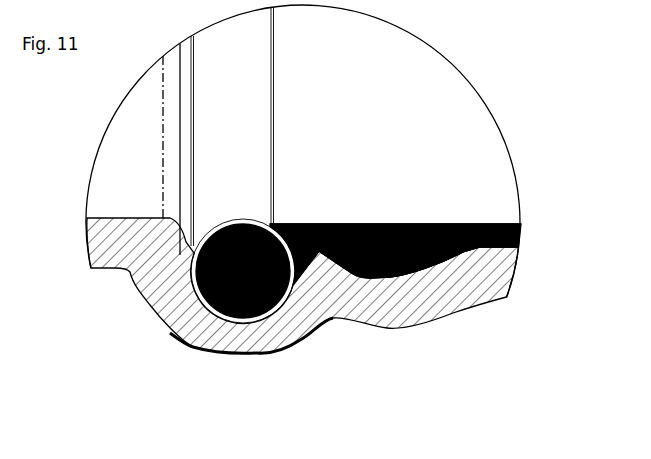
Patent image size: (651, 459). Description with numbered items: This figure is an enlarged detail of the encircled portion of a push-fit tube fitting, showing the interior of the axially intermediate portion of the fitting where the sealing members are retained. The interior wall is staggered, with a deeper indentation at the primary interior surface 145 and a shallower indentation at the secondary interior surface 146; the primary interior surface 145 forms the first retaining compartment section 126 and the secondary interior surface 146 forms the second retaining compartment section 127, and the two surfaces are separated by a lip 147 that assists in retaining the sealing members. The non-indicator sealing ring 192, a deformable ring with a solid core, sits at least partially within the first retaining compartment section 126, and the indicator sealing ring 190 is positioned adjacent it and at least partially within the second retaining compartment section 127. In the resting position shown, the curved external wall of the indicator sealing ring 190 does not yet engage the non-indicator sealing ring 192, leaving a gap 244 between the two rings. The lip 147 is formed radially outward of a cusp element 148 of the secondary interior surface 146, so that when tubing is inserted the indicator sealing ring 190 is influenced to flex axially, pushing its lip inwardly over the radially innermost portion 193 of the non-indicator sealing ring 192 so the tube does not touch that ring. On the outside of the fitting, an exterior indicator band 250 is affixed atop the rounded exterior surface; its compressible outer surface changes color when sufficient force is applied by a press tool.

The first retaining compartment section 126 is at (230, 326).
The second retaining compartment section 127 is at (416, 290).
The primary interior surface 145 is at (191, 231).
The secondary interior surface 146 is at (337, 223).
The lip 147 is at (322, 273).
The cusp element 148 is at (486, 259).
The indicator sealing ring 190 is at (430, 223).
The non-indicator sealing ring 192 is at (155, 303).
The radially innermost portion 193 is at (243, 214).
The gap 244 is at (293, 288).
The exterior indicator band 250 is at (178, 348).